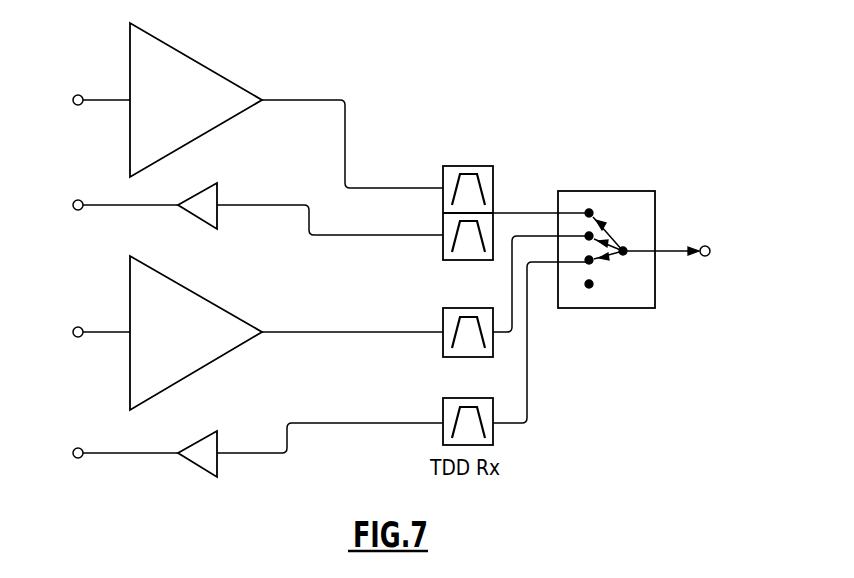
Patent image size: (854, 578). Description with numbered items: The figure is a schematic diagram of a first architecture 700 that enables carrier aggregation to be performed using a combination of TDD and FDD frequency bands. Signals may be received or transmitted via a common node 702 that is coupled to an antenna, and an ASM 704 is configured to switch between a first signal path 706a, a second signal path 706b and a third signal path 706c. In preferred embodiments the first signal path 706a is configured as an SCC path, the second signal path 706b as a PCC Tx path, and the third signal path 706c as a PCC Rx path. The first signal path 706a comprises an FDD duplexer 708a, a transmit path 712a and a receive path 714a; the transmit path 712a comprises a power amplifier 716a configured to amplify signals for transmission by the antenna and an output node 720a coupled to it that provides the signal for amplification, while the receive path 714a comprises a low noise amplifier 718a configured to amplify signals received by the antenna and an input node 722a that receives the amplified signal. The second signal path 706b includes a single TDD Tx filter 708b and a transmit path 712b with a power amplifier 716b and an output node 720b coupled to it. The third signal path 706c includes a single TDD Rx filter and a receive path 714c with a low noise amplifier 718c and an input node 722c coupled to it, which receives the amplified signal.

The first architecture 700 is at (524, 64).
The common node 702 is at (706, 257).
The ASM 704 is at (634, 191).
The first signal path 706a is at (508, 213).
The second signal path 706b is at (514, 318).
The third signal path 706c is at (529, 402).
The FDD duplexer 708a is at (443, 181).
The TDD Tx filter 708b is at (443, 310).
The transmit path 712a is at (346, 100).
The transmit path 712b is at (310, 332).
The receive path 714a is at (270, 205).
The receive path 714c is at (297, 424).
The power amplifier 716a is at (205, 65).
The power amplifier 716b is at (205, 297).
The low noise amplifier 718a is at (219, 186).
The low noise amplifier 718c is at (219, 436).
The output node 720a is at (79, 94).
The output node 720b is at (79, 326).
The input node 722a is at (79, 199).
The input node 722c is at (79, 447).